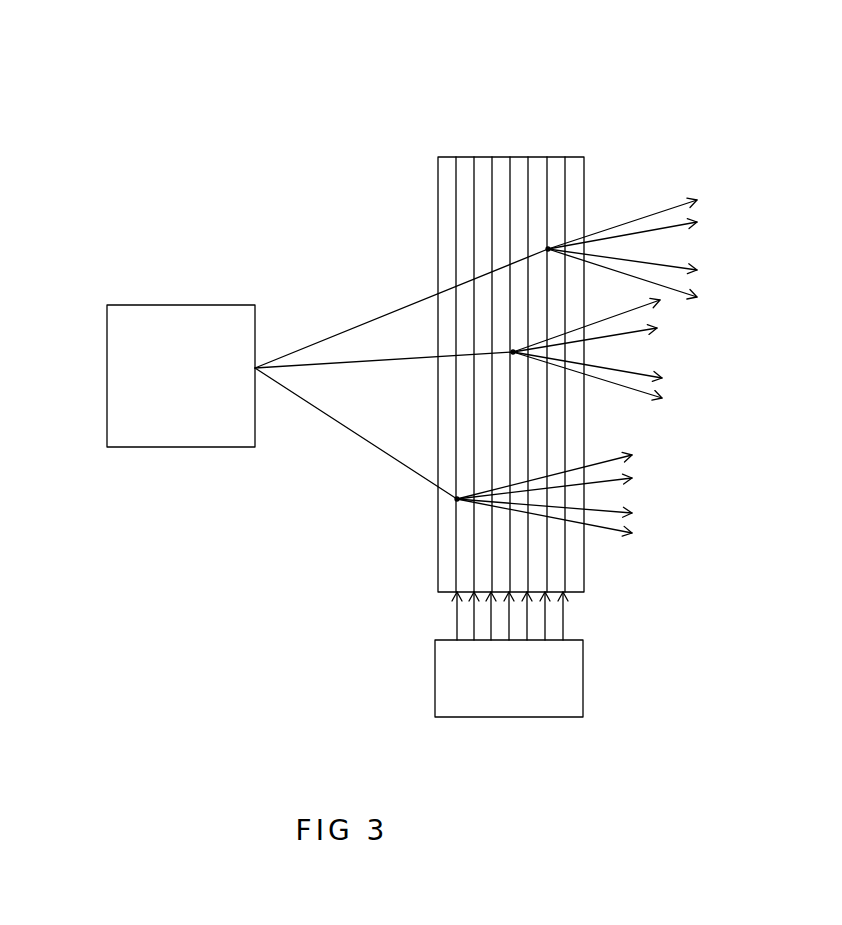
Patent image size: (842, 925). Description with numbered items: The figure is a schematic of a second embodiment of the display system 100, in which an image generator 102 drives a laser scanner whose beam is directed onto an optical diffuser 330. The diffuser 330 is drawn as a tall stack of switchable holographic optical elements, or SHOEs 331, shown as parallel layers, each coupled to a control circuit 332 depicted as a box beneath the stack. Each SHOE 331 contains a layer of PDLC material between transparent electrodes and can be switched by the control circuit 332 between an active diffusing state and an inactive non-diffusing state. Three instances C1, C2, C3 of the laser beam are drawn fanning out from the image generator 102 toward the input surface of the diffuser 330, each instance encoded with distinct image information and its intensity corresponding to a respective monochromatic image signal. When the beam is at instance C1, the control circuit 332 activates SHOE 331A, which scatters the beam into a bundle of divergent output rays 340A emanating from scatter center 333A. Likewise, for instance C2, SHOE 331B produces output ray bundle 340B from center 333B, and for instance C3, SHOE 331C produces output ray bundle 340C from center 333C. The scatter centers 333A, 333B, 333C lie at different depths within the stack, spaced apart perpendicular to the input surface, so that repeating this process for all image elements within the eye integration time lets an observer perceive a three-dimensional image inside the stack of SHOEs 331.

The system 100 is at (150, 105).
The image generator 102 is at (172, 305).
The first instance of the laser beam C1 is at (305, 337).
The second instance of the laser beam C2 is at (366, 355).
The third instance of the laser beam C3 is at (358, 443).
The optical diffuser 330 is at (719, 85).
The SHOE 331 is at (420, 161).
The first SHOE 331A is at (542, 152).
The second SHOE 331B is at (508, 152).
The third SHOE 331C is at (447, 157).
The control circuit 332 is at (509, 654).
The first scatter center 333A is at (553, 243).
The second scatter center 333B is at (520, 357).
The third scatter center 333C is at (463, 507).
The first output ray bundle 340A is at (722, 192).
The second output ray bundle 340B is at (666, 293).
The third output ray bundle 340C is at (640, 445).